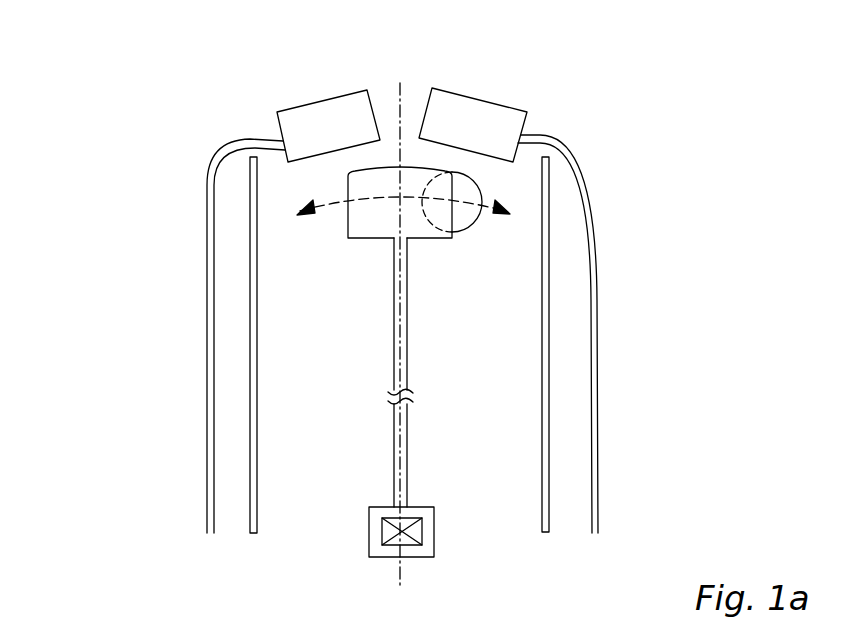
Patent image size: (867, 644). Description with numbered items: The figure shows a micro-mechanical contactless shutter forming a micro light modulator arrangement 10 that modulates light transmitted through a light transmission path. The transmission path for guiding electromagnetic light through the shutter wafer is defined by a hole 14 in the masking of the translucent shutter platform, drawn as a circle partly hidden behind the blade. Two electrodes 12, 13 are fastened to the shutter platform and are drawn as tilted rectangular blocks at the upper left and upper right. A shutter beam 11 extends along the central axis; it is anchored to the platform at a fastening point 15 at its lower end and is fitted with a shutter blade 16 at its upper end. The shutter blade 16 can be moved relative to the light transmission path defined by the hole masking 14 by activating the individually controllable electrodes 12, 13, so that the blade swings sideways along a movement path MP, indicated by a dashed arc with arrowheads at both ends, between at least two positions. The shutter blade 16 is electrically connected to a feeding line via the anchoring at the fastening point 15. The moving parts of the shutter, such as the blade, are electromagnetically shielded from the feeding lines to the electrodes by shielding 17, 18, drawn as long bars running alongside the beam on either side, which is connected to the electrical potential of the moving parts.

The micro light modulator arrangement 10 is at (128, 268).
The shutter beam 11 is at (408, 328).
The electrode 12 is at (297, 105).
The electrode 13 is at (490, 102).
The hole 14 is at (467, 230).
The fastening point 15 is at (369, 522).
The shutter blade 16 is at (365, 242).
The shielding 17 is at (258, 390).
The shielding 18 is at (542, 402).
The movement path MP is at (326, 208).